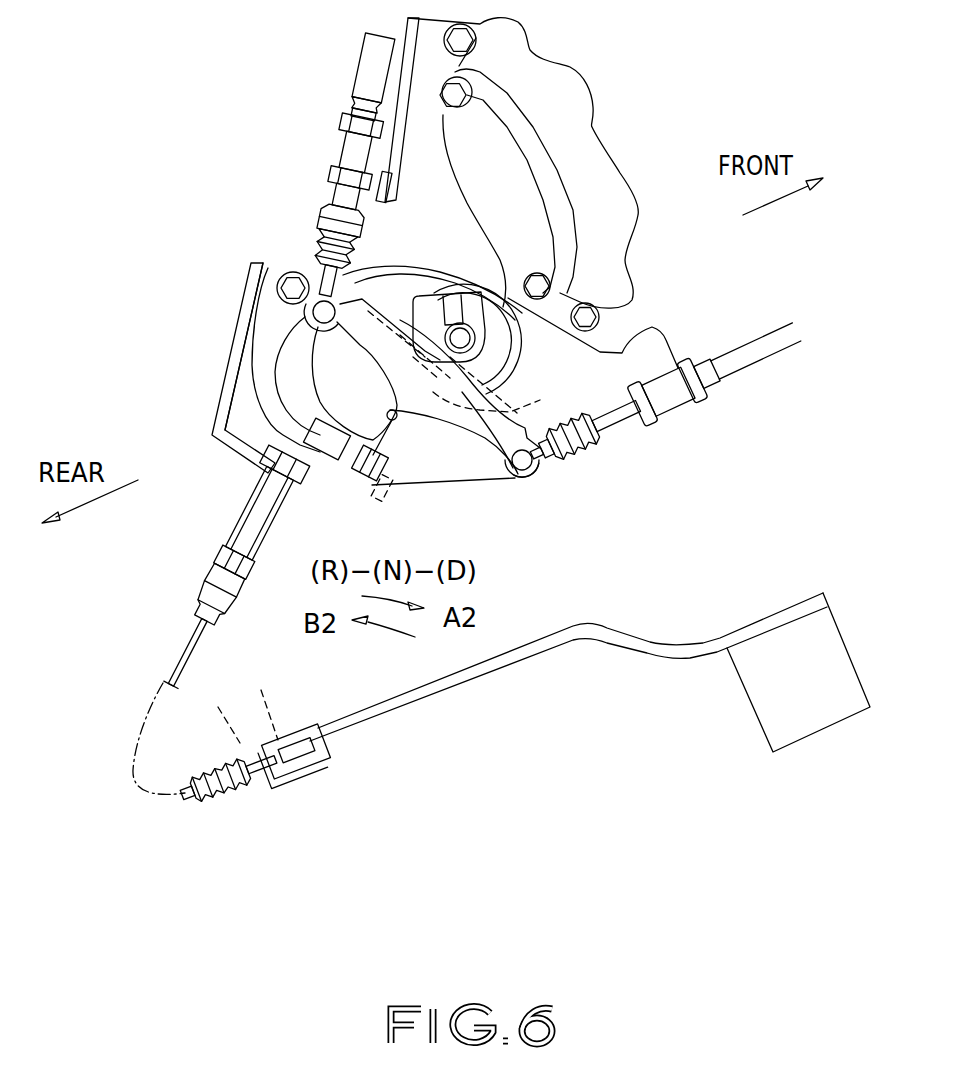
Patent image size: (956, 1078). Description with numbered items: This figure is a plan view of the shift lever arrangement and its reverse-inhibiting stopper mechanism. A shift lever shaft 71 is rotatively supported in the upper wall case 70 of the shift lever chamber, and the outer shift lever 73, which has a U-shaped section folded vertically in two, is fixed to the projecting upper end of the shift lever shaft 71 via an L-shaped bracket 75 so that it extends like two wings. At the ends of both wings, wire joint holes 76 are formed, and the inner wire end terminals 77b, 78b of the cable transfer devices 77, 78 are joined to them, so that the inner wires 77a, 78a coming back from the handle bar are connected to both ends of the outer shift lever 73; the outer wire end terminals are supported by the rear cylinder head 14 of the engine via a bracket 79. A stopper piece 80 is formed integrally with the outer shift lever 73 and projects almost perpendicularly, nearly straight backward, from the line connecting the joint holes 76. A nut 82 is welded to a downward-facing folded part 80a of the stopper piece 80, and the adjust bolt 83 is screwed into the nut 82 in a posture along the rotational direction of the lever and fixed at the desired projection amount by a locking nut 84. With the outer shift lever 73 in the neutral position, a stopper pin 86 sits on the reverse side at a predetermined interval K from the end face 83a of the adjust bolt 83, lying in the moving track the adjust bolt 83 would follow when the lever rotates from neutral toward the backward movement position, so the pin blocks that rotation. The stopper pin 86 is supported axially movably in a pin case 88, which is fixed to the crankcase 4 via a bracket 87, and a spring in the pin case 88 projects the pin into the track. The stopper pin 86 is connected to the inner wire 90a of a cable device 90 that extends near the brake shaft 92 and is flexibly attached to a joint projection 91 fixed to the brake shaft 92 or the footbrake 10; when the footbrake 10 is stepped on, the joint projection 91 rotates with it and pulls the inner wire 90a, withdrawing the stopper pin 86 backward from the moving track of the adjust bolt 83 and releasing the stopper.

The crankcase 4 is at (297, 343).
The footbrake 10 is at (637, 643).
The rear cylinder head 14 is at (585, 135).
The upper wall case 70 is at (620, 348).
The shift lever shaft 71 is at (507, 262).
The outer shift lever 73 is at (380, 301).
The L-shaped bracket 75 is at (516, 404).
The wire joint holes 76 is at (277, 286).
The cable transfer device 77 is at (752, 362).
The inner wire 77a is at (531, 470).
The inner wire end terminal 77b is at (538, 478).
The cable transfer device 78 is at (367, 72).
The inner wire 78a is at (310, 302).
The inner wire end terminal 78b is at (328, 327).
The bracket 79 is at (420, 150).
The stopper piece 80 is at (430, 483).
The downward-facing folded part 80a is at (447, 432).
The nut 82 is at (352, 472).
The adjust bolt 83 is at (262, 494).
The end face 83a is at (277, 442).
The locking nut 84 is at (386, 500).
The stopper pin 86 is at (310, 430).
The bracket 87 is at (233, 348).
The predetermined interval K is at (273, 383).
The pin case 88 is at (233, 537).
The cable device 90 is at (192, 620).
The inner wire 90a is at (180, 660).
The joint projection 91 is at (317, 760).
The brake shaft 92 is at (273, 780).